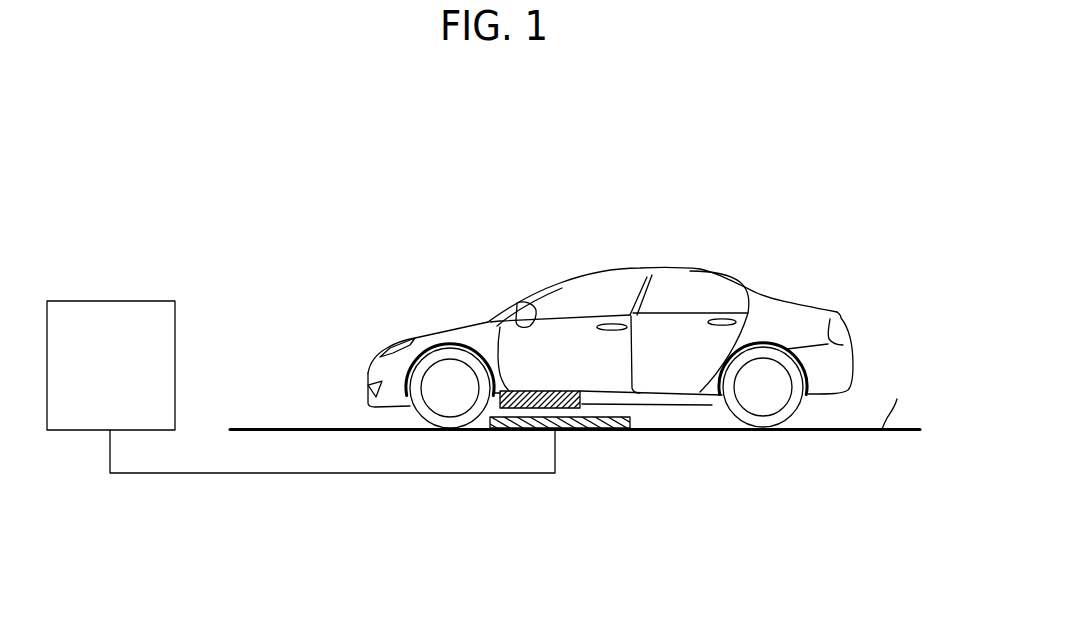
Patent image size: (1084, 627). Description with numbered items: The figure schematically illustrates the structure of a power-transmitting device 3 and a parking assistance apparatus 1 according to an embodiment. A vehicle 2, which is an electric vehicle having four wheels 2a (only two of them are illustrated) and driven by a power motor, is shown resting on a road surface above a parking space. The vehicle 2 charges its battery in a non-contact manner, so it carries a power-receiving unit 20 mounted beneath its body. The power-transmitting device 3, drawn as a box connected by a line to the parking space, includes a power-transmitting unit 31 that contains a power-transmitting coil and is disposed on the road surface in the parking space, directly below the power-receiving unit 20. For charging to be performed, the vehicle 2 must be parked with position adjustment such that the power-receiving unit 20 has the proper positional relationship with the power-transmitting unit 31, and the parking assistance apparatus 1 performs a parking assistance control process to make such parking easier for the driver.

The parking assistance apparatus 1 is at (565, 167).
The vehicle 2 is at (692, 262).
The wheels 2a is at (451, 360).
The power-transmitting device 3 is at (107, 288).
The power-receiving unit 20 is at (533, 391).
The power-transmitting unit 31 is at (606, 431).